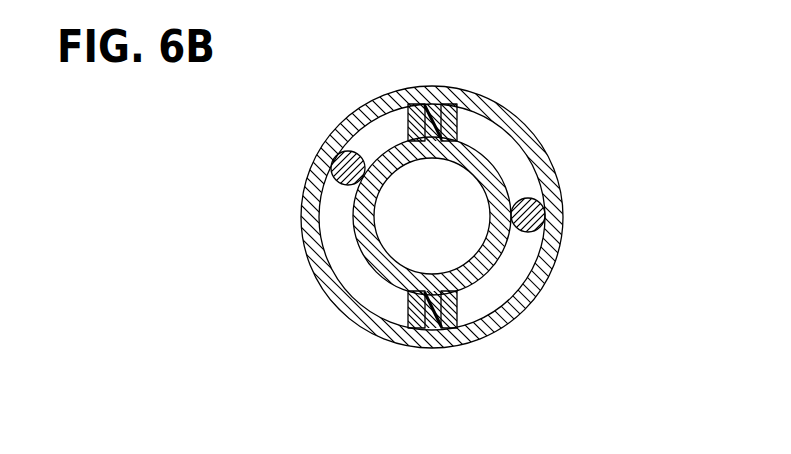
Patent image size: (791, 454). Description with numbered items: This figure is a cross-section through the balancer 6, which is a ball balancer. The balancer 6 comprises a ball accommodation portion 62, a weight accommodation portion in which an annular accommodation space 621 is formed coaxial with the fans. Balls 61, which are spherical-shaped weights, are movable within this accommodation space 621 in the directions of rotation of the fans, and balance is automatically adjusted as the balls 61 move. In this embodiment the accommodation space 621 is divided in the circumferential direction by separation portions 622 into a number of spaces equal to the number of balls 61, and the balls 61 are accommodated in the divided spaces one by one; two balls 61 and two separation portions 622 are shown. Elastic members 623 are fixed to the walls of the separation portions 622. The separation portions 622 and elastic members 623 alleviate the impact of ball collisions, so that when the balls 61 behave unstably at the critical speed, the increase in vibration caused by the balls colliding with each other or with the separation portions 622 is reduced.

The balancer 6 is at (303, 202).
The balls 61 is at (347, 161).
The ball accommodation portion 62 is at (541, 157).
The accommodation space 621 is at (348, 272).
The separation portions 622 is at (446, 109).
The elastic members 623 is at (410, 124).